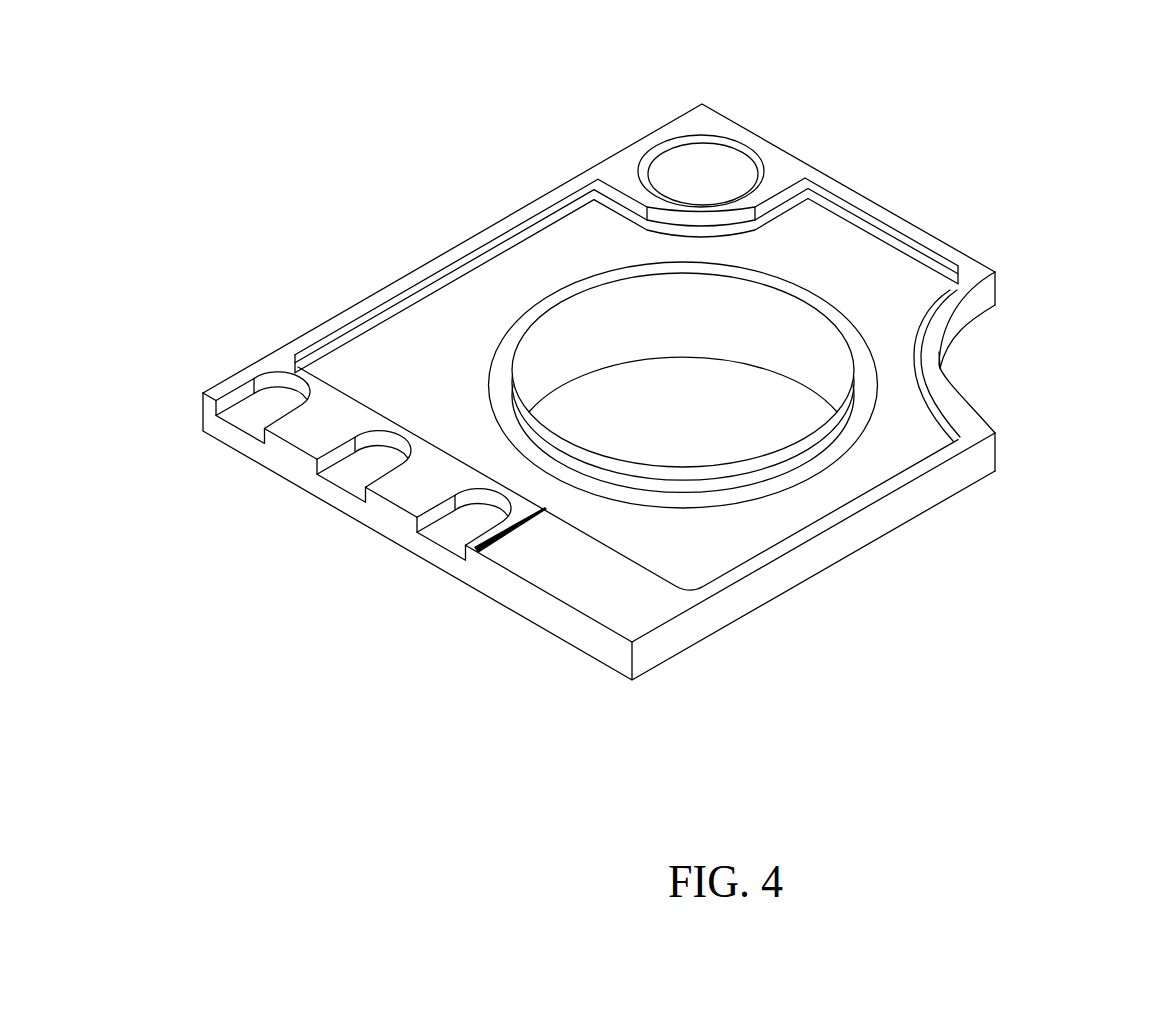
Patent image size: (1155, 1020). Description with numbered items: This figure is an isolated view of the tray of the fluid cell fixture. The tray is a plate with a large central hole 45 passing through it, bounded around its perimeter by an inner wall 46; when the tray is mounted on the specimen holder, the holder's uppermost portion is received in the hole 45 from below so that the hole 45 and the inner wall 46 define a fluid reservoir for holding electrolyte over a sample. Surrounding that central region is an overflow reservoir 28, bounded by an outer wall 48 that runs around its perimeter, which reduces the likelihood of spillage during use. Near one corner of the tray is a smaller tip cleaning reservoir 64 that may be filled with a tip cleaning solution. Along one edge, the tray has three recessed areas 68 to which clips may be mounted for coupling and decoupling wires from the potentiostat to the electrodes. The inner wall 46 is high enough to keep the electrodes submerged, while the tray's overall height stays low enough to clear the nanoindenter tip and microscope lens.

The overflow reservoir 28 is at (892, 293).
The hole 45 is at (600, 338).
The inner wall 46 is at (853, 405).
The outer wall 48 is at (903, 238).
The tip cleaning reservoir 64 is at (683, 162).
The recessed areas 68 is at (468, 536).